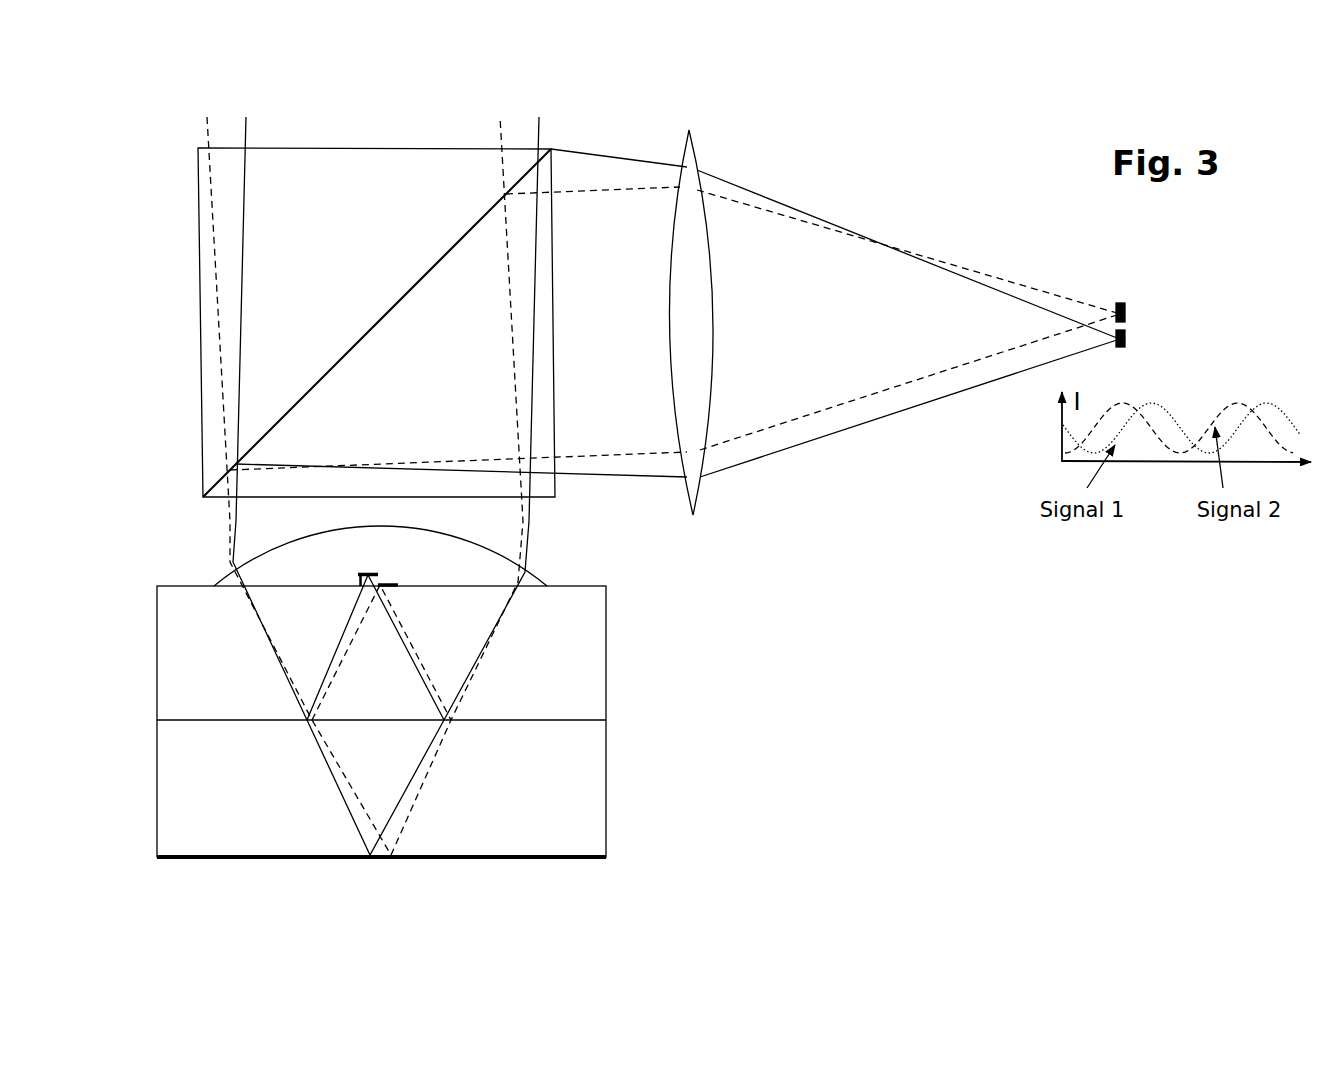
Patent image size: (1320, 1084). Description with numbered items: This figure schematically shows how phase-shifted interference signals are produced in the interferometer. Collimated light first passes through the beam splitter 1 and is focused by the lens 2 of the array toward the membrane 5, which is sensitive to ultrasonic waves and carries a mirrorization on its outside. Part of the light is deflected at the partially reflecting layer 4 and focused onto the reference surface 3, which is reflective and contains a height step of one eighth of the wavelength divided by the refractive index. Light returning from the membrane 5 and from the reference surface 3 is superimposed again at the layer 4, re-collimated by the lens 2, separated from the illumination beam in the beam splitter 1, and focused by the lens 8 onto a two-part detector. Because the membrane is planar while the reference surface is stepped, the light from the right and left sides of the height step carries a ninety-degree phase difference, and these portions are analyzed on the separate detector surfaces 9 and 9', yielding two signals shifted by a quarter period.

The beam splitter 1 is at (208, 282).
The lens 2 is at (269, 564).
The reference surface 3 is at (382, 573).
The partially reflecting layer 4 is at (560, 722).
The membrane 5 is at (552, 858).
The lens 8 is at (702, 252).
The detector 9 is at (1154, 300).
The detector 9' is at (1158, 348).